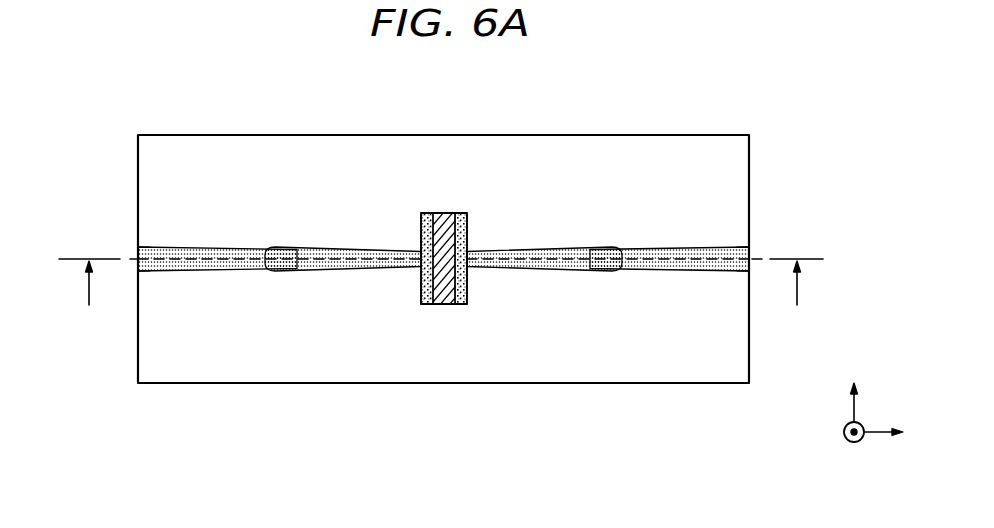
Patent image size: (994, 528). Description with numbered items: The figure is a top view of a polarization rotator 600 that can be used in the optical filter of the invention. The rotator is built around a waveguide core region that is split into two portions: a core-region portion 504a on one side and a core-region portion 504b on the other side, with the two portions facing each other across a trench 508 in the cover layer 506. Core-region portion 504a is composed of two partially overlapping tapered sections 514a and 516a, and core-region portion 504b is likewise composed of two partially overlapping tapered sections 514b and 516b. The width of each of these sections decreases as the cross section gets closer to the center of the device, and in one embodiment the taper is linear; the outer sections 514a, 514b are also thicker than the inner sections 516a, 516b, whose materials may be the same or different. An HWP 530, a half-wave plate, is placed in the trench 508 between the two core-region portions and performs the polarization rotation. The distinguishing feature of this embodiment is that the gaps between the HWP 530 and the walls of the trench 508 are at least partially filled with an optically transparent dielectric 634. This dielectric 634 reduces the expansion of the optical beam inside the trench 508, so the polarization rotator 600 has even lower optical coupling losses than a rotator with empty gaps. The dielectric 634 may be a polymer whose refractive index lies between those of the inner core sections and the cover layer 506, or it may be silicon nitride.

The polarization rotator 600 is at (462, 83).
The cover layer 506 is at (732, 371).
The core-region portion 504a is at (124, 244).
The core-region portion 504b is at (763, 244).
The tapered section 514a is at (190, 272).
The tapered section 514b is at (692, 272).
The tapered section 516a is at (345, 268).
The tapered section 516b is at (580, 272).
The trench 508 is at (467, 229).
The HWP 530 is at (440, 304).
The optically transparent dielectric 634 is at (467, 301).